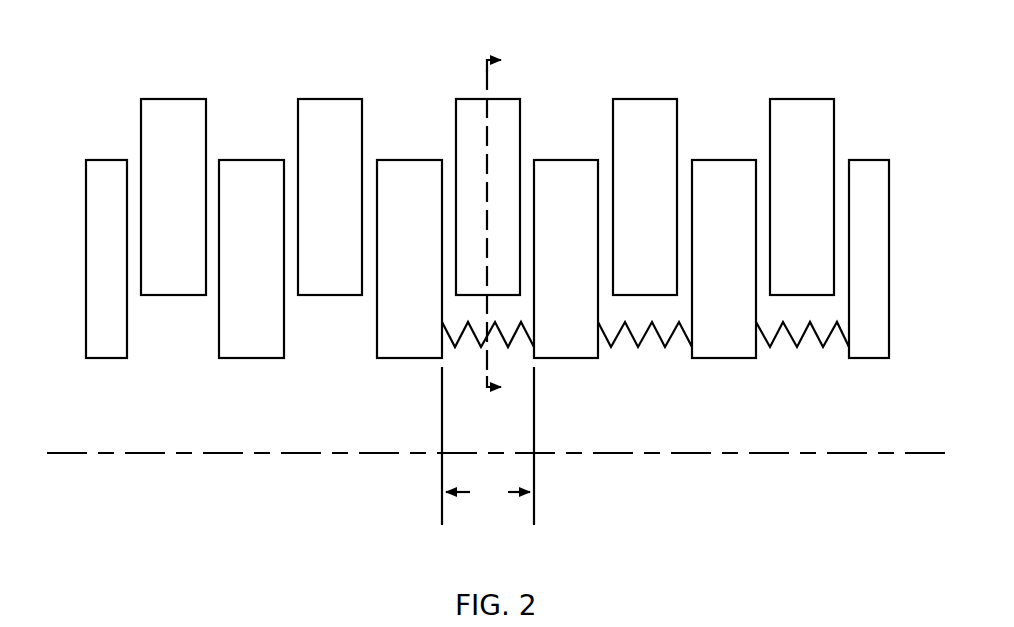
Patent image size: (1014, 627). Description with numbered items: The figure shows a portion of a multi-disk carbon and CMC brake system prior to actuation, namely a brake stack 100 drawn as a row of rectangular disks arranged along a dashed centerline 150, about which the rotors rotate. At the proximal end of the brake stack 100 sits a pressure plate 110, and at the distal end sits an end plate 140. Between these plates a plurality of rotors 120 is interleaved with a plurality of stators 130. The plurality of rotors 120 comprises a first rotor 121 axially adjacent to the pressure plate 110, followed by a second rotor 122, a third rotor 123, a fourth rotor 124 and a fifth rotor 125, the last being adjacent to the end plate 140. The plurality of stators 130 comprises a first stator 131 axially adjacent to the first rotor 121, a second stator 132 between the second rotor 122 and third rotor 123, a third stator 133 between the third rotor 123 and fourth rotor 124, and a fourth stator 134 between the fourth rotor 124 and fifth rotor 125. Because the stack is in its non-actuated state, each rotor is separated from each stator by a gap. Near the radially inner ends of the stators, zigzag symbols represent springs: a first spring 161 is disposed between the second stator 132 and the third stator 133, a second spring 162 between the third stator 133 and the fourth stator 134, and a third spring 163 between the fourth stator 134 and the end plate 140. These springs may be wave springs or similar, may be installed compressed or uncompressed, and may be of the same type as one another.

The brake stack 100 is at (128, 62).
The pressure plate 110 is at (102, 322).
The plurality of rotors 120 is at (167, 125).
The first rotor 121 is at (191, 266).
The second rotor 122 is at (349, 266).
The third rotor 123 is at (470, 152).
The fourth rotor 124 is at (666, 266).
The fifth rotor 125 is at (823, 266).
The plurality of stators 130 is at (239, 178).
The first stator 131 is at (270, 266).
The second stator 132 is at (429, 266).
The third stator 133 is at (586, 266).
The fourth stator 134 is at (743, 266).
The end plate 140 is at (877, 322).
The centerline 150 is at (217, 455).
The first spring 161 is at (456, 349).
The second spring 162 is at (638, 349).
The third spring 163 is at (796, 349).